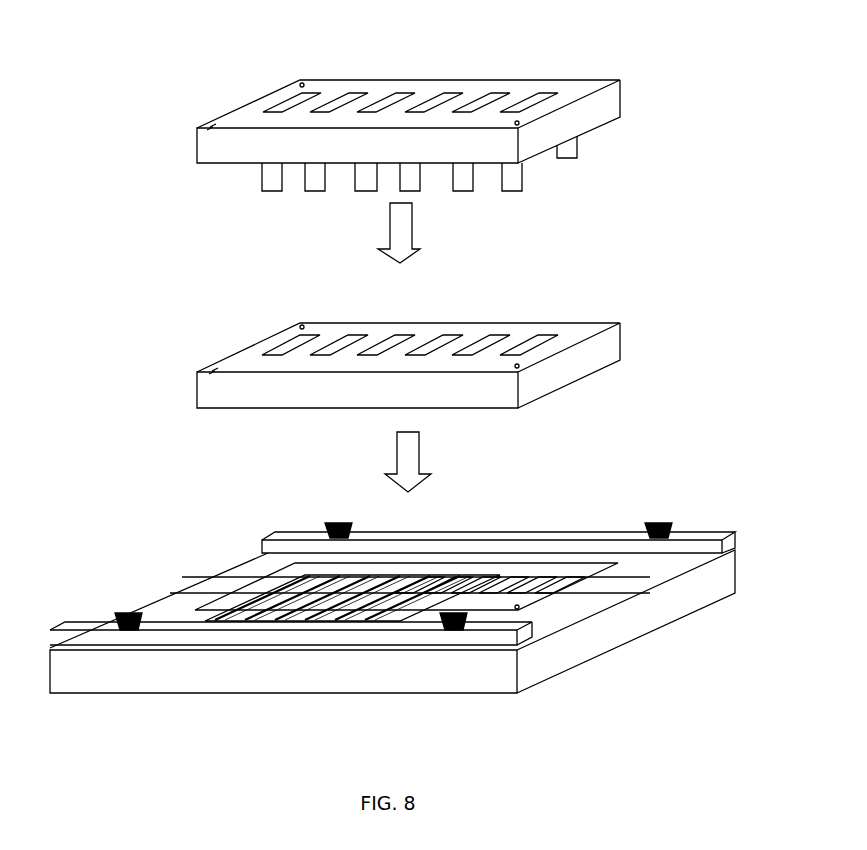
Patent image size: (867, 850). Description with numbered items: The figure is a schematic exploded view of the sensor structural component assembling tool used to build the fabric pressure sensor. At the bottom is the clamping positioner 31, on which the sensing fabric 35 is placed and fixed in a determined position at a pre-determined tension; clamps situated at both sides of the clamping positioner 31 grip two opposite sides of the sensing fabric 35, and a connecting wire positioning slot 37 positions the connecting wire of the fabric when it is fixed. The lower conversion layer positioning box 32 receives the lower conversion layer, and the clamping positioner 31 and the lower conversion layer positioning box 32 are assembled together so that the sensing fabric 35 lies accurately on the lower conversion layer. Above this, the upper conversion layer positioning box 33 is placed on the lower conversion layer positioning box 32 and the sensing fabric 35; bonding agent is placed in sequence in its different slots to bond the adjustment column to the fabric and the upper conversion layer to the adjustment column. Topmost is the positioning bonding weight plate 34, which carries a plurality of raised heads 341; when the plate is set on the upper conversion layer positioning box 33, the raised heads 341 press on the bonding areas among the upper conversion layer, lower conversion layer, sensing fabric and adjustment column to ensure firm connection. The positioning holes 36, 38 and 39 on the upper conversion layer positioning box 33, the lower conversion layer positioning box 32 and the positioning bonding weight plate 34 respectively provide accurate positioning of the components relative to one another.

The clamping positioner 31 is at (157, 609).
The lower conversion layer positioning box 32 is at (574, 562).
The upper conversion layer positioning box 33 is at (236, 357).
The positioning bonding weight plate 34 is at (231, 105).
The raised heads 341 is at (526, 178).
The sensing fabric 35 is at (232, 605).
The positioning hole 36 is at (604, 560).
The connecting wire positioning slot 37 is at (610, 598).
The positioning hole 38 is at (603, 324).
The positioning hole 39 is at (603, 79).